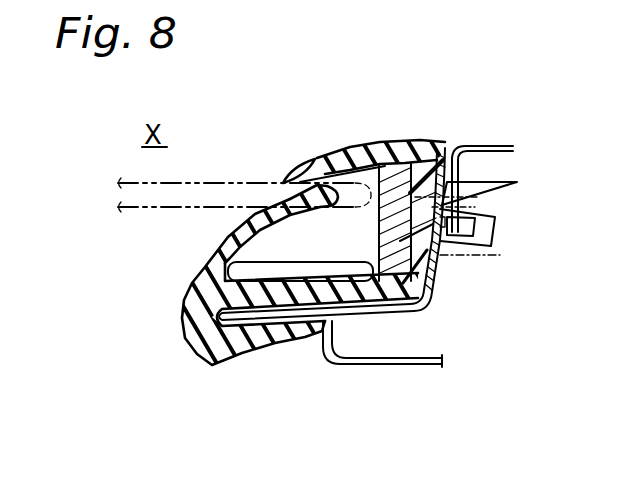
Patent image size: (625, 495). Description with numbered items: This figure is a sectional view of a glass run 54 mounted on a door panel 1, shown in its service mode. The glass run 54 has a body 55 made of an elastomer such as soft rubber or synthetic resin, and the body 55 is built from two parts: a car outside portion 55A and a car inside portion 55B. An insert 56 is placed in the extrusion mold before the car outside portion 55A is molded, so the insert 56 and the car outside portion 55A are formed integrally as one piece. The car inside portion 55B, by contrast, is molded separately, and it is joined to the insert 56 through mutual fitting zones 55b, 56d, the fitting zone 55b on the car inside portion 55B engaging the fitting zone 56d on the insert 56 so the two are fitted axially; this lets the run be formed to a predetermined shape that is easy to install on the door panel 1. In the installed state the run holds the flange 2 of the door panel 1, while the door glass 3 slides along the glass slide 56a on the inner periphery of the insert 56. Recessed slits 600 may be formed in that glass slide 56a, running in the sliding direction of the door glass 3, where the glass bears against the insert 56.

The door panel 1 is at (503, 139).
The flange 2 is at (265, 338).
The door glass 3 is at (124, 192).
The glass run 54 is at (467, 72).
The body 55 is at (442, 138).
The car outside portion 55A is at (440, 263).
The car inside portion 55B is at (400, 313).
The mutual fitting zone of the car inside portion 55b is at (373, 364).
The insert 56 is at (395, 138).
The glass slide 56a is at (372, 238).
The mutual fitting zone of the insert 56d is at (340, 348).
The recessed slits 600 is at (490, 256).